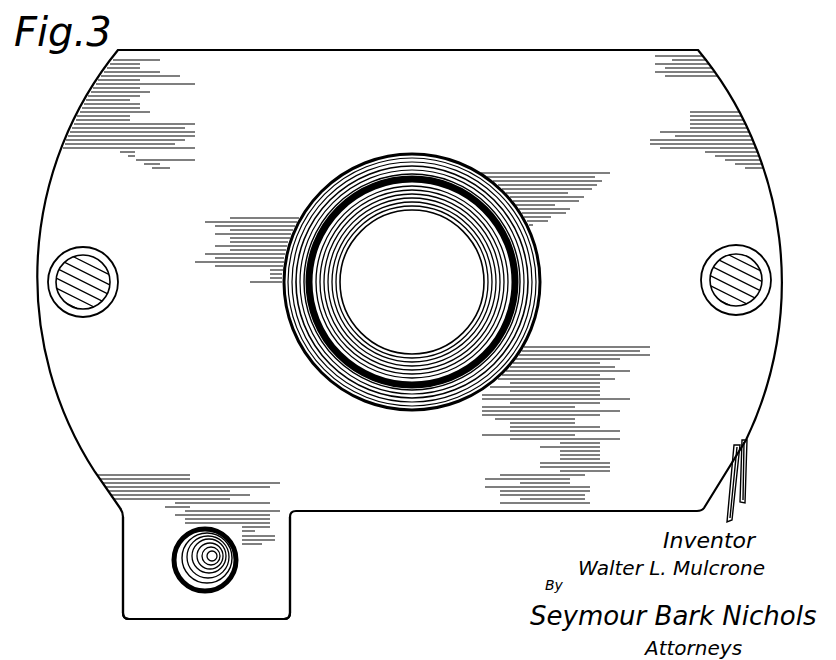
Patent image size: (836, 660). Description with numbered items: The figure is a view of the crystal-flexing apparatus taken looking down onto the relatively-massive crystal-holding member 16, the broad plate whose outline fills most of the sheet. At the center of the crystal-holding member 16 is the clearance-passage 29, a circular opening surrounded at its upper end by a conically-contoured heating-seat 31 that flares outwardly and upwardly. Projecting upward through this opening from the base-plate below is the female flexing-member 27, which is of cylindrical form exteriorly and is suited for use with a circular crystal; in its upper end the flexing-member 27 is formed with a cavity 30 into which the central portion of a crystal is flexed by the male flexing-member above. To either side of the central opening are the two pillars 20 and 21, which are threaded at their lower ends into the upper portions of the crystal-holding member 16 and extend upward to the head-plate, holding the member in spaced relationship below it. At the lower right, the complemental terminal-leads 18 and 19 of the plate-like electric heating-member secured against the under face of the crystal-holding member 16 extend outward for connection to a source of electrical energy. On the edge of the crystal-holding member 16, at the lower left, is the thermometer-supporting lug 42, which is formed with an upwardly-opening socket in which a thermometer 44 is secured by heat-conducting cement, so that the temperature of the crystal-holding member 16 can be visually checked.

The crystal-holding member 16 is at (386, 513).
The terminal-lead 18 is at (727, 519).
The terminal-lead 19 is at (742, 503).
The pillar 20 is at (86, 302).
The pillar 21 is at (718, 263).
The female flexing-member 27 is at (302, 316).
The clearance-passage 29 is at (320, 340).
The cavity 30 is at (347, 357).
The heating-seat 31 is at (322, 367).
The thermometer-supporting lug 42 is at (171, 620).
The thermometer 44 is at (176, 573).